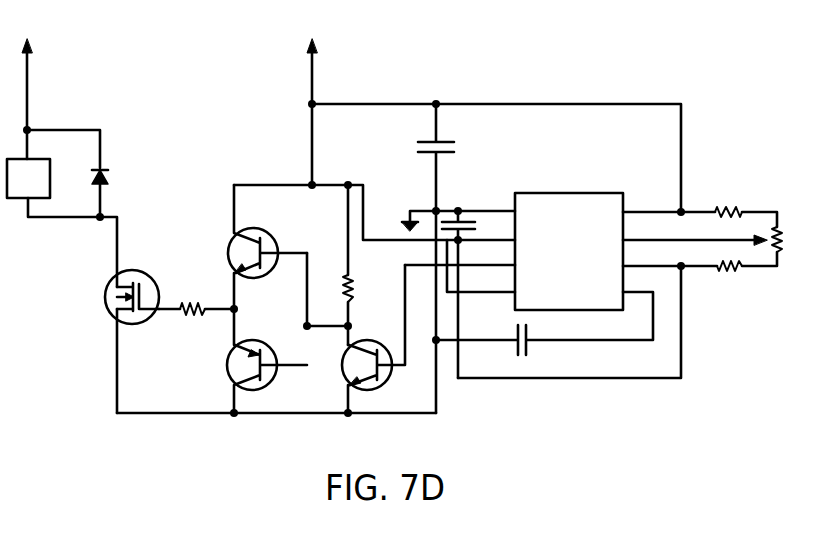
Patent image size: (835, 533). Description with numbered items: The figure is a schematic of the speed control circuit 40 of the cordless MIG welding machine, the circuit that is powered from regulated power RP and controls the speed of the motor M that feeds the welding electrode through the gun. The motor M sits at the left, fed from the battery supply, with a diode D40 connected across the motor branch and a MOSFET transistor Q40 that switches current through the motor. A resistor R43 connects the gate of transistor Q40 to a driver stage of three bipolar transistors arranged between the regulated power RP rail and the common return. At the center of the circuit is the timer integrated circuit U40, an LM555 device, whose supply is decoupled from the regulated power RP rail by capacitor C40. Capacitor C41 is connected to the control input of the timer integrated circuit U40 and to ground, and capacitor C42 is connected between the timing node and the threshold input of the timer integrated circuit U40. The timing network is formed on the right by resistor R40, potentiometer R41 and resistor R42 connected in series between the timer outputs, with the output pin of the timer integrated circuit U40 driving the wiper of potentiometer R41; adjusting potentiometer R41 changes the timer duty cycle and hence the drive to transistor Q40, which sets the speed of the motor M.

The speed control circuit 40 is at (511, 74).
The diode D40 is at (113, 193).
The MOSFET transistor Q40 is at (138, 334).
The resistor R43 is at (196, 322).
The capacitor C40 is at (450, 258).
The capacitor C41 is at (472, 294).
The capacitor C42 is at (544, 323).
The timer integrated circuit U40 is at (586, 262).
The resistor R40 is at (700, 206).
The potentiometer R41 is at (777, 246).
The resistor R42 is at (682, 278).